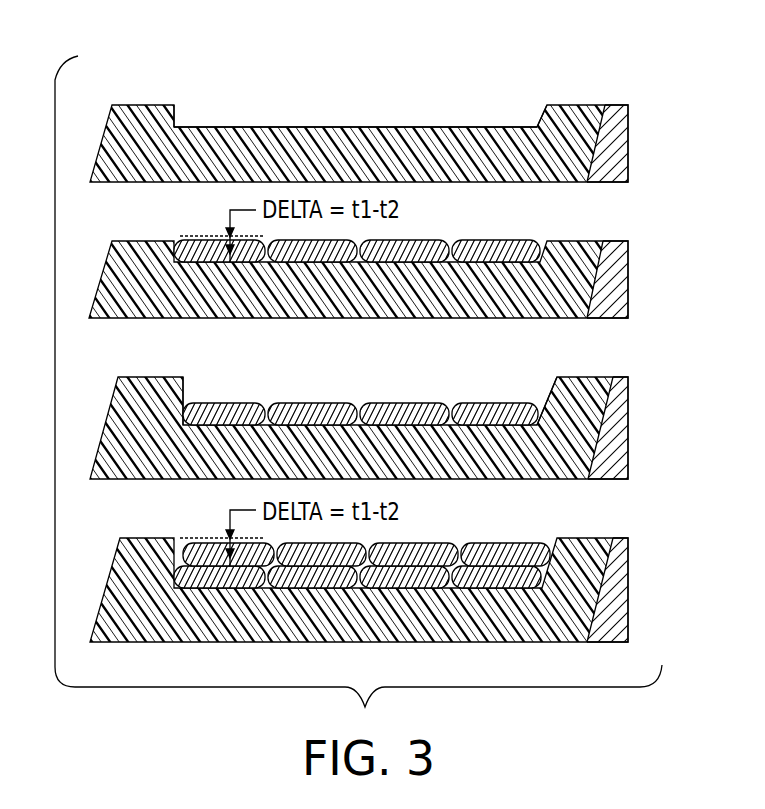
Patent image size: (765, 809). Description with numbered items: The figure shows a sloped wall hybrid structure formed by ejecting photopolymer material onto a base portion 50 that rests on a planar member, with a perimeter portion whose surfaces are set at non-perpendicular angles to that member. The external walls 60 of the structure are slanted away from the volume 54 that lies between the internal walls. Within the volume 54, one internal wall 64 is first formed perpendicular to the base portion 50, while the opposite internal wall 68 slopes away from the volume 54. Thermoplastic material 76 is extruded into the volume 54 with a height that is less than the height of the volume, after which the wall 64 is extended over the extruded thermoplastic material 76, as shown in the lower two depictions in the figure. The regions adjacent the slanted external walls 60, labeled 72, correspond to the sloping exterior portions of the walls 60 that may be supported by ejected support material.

The base portion 50 is at (517, 183).
The volume 54 is at (343, 119).
The external walls 60 is at (382, 360).
The internal wall 64 is at (192, 117).
The internal wall 68 is at (533, 117).
The end cap / edge portion 72 is at (630, 112).
The thermoplastic material 76 is at (427, 240).